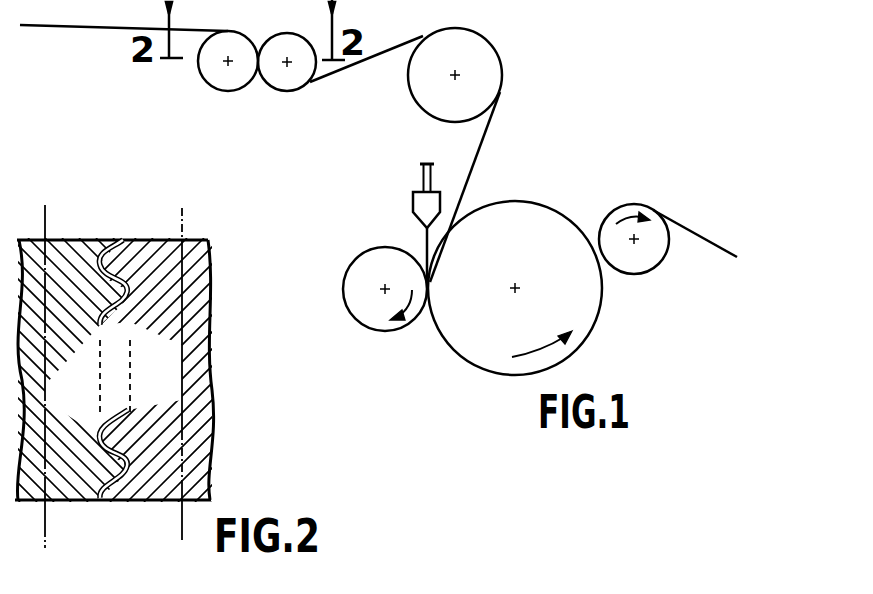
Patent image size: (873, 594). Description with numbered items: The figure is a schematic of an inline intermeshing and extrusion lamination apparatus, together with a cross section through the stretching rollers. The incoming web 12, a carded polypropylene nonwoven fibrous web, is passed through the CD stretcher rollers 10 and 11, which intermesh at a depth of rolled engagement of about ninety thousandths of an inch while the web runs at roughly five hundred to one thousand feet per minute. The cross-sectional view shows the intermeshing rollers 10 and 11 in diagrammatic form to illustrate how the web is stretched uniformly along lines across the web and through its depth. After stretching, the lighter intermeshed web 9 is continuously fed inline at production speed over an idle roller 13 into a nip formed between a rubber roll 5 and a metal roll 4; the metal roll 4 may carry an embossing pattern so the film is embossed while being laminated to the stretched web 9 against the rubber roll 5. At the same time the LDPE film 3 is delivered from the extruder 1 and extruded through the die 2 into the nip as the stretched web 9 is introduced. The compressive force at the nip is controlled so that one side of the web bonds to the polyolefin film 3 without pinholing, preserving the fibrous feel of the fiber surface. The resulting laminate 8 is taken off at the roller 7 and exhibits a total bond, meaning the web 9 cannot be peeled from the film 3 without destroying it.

In FIG. 1, the extruder 1 is at (422, 168).
In FIG. 1, the die 2 is at (414, 205).
In FIG. 1, the LDPE film 3 is at (424, 238).
In FIG. 1, the metal roll 4 is at (520, 232).
In FIG. 1, the rubber roll 5 is at (404, 268).
In FIG. 1, the roller 7 is at (645, 258).
In FIG. 1, the laminate 8 is at (726, 248).
In FIG. 1, the stretched web 9 is at (367, 63).
In FIG. 1, the CD stretcher roller 10 is at (210, 70).
In FIG. 2, the CD stretcher roller 10 is at (70, 238).
In FIG. 1, the CD stretcher roller 11 is at (287, 80).
In FIG. 2, the CD stretcher roller 11 is at (195, 238).
In FIG. 1, the incoming web 12 is at (58, 32).
In FIG. 1, the idle roller 13 is at (497, 85).